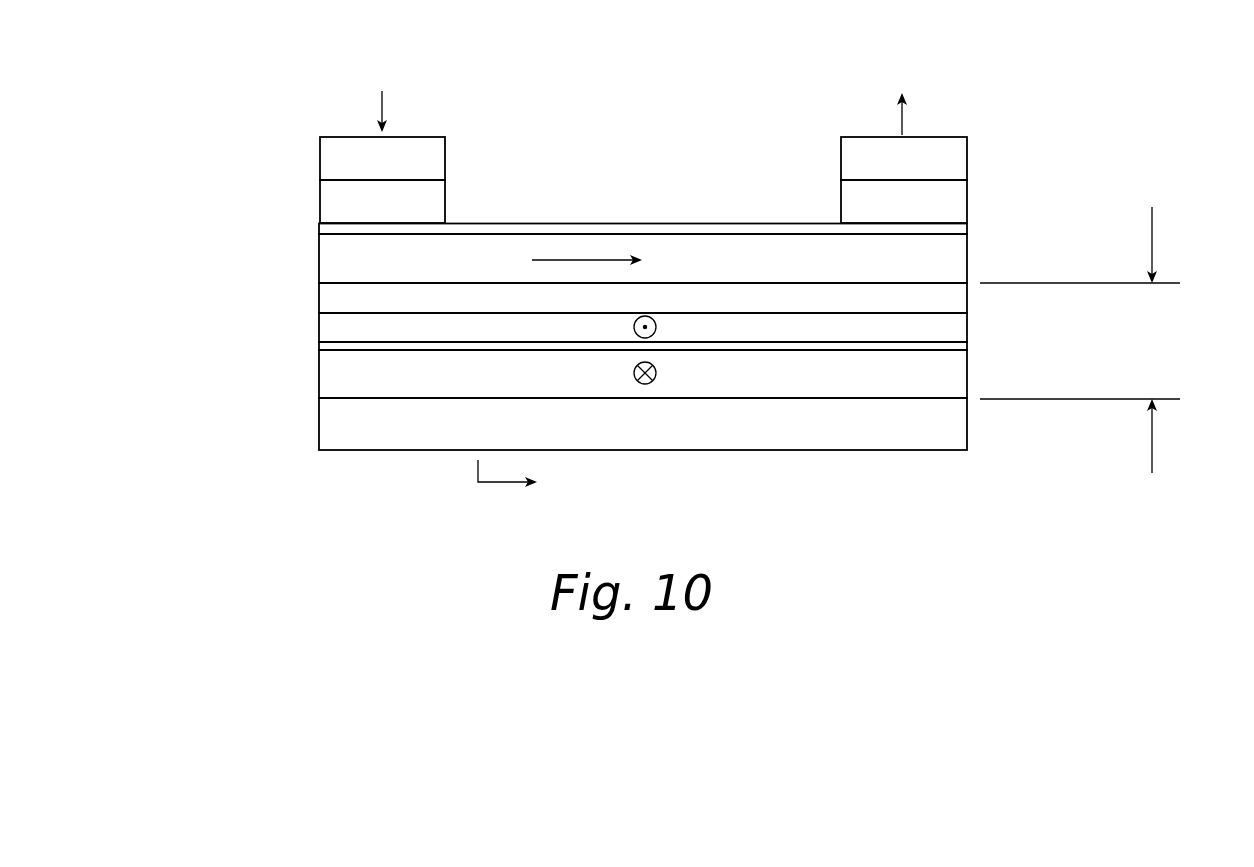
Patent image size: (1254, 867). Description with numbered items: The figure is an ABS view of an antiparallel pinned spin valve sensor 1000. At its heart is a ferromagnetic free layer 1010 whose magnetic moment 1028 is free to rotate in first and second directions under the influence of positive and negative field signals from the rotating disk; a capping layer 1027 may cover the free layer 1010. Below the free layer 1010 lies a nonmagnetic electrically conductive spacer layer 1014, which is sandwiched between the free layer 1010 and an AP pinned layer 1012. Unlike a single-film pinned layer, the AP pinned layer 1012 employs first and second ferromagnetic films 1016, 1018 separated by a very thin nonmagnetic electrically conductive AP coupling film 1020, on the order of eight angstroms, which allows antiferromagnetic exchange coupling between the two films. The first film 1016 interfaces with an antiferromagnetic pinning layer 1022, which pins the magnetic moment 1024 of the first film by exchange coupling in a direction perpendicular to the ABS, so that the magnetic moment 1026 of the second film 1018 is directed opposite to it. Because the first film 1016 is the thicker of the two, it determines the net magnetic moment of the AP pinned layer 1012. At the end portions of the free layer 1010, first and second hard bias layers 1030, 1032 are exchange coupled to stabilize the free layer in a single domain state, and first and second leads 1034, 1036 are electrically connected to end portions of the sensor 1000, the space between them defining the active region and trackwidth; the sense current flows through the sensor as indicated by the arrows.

The sensor 1000 is at (972, 63).
The first lead 1034 is at (320, 165).
The first hard bias layer 1030 is at (320, 195).
The second lead 1036 is at (967, 152).
The second hard bias layer 1032 is at (967, 197).
The capping layer 1027 is at (967, 226).
The free layer 1010 is at (967, 270).
The magnetic moment of the free layer 1028 is at (578, 258).
The spacer layer 1014 is at (967, 299).
The second ferromagnetic film 1018 is at (967, 325).
The magnetic moment of the second film 1026 is at (633, 328).
The AP coupling film 1020 is at (967, 346).
The first ferromagnetic film 1016 is at (967, 370).
The magnetic moment of the first film 1024 is at (633, 373).
The antiferromagnetic pinning layer 1022 is at (967, 422).
The AP pinned layer 1012 is at (1092, 340).